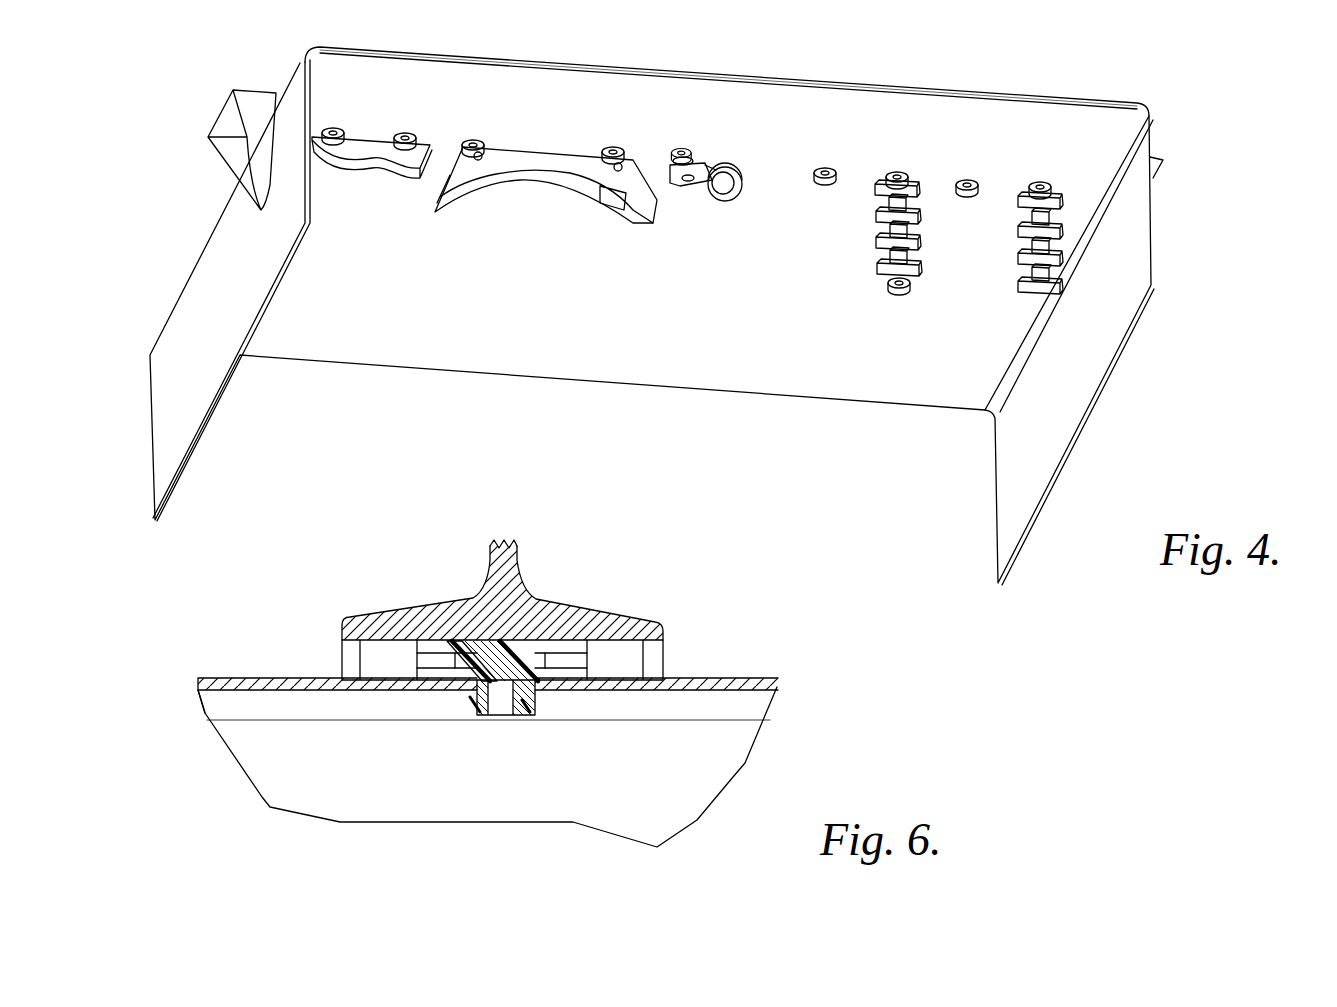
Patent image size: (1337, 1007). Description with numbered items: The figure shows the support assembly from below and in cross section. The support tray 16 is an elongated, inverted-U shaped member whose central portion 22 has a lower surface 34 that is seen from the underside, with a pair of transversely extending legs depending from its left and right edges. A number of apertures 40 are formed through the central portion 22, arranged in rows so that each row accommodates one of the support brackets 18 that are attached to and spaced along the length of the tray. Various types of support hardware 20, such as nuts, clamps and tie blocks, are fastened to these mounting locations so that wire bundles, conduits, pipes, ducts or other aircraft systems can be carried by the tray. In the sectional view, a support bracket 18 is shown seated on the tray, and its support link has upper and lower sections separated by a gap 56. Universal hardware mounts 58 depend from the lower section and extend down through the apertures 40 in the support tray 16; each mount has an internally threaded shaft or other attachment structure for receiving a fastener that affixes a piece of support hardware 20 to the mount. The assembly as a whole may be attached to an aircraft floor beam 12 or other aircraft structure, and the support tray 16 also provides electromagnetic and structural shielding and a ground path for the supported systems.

In FIG. 6, the aircraft floor beam 12 is at (537, 603).
In FIG. 4, the support tray 16 is at (1036, 92).
In FIG. 6, the support tray 16 is at (233, 659).
In FIG. 4, the support bracket 18 is at (207, 115).
In FIG. 6, the support bracket 18 is at (458, 652).
In FIG. 4, the support hardware 20 is at (390, 168).
In FIG. 6, the central portion 22 is at (721, 677).
In FIG. 4, the lower surface 34 is at (722, 98).
In FIG. 6, the aperture 40 is at (483, 692).
In FIG. 6, the gap 56 is at (453, 665).
In FIG. 4, the universal hardware mount 58 is at (538, 147).
In FIG. 6, the universal hardware mount 58 is at (520, 700).